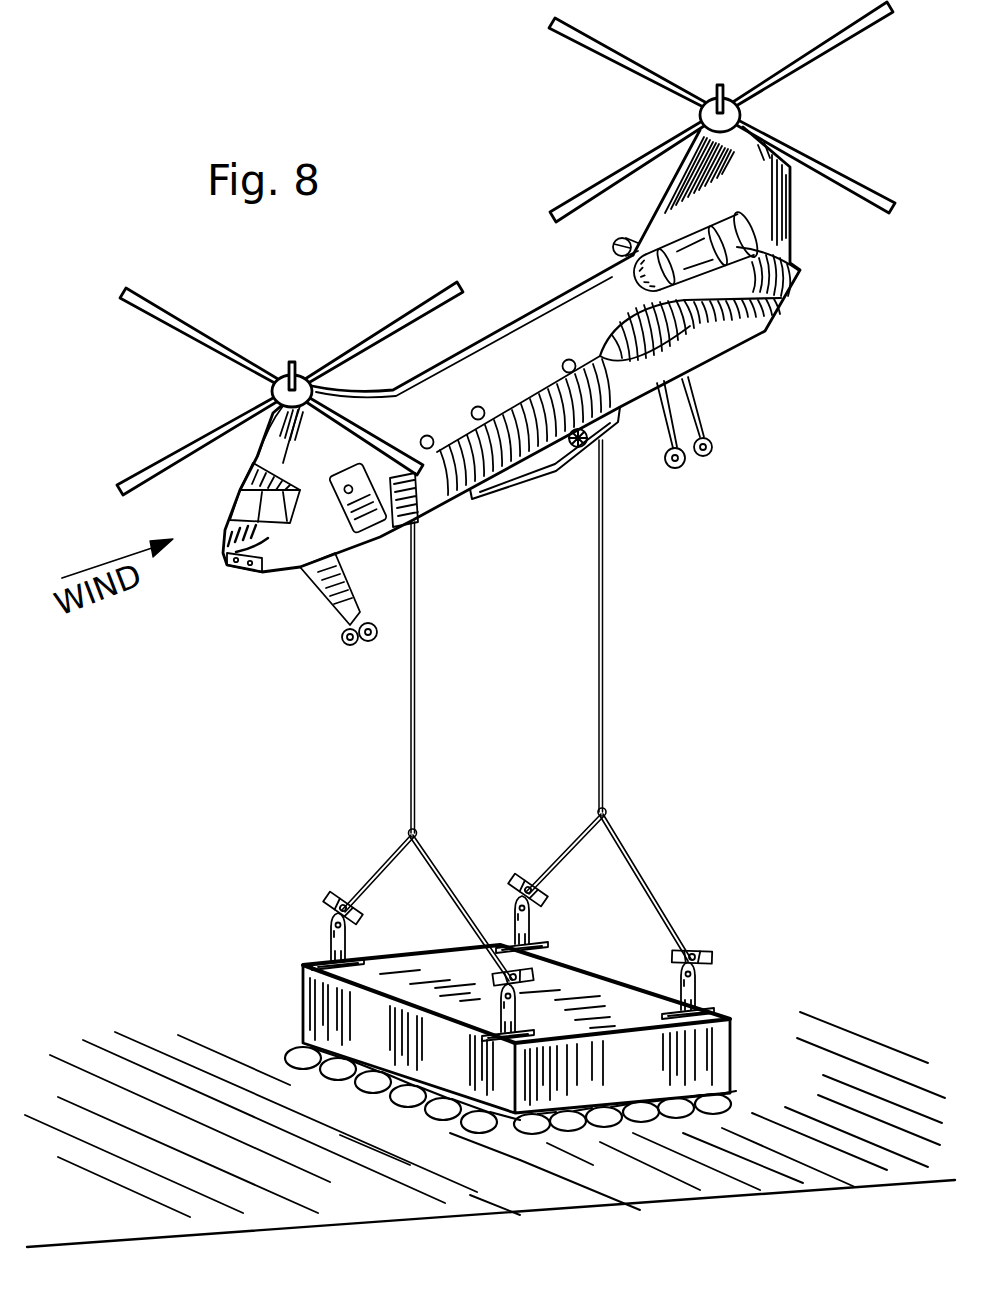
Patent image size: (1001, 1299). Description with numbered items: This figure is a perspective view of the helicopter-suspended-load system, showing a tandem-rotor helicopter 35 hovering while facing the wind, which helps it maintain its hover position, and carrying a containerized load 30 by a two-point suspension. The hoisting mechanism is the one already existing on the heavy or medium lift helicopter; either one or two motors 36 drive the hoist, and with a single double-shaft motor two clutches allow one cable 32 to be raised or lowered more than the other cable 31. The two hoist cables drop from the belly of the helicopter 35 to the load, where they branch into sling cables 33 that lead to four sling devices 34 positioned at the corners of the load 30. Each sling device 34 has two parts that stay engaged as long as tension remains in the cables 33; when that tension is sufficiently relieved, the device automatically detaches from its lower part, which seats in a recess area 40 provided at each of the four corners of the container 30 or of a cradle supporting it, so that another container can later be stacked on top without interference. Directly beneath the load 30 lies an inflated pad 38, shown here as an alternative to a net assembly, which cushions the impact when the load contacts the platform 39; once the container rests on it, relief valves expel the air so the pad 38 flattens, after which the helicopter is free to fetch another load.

The load 30 is at (733, 1037).
The cable 31 is at (608, 650).
The cable 32 is at (416, 722).
The cables 33 is at (643, 875).
The sling device 34 is at (717, 943).
The helicopter 35 is at (773, 326).
The motor 36 is at (582, 447).
The inflated pad 38 is at (736, 1102).
The platform 39 is at (490, 1129).
The recess area 40 is at (536, 947).